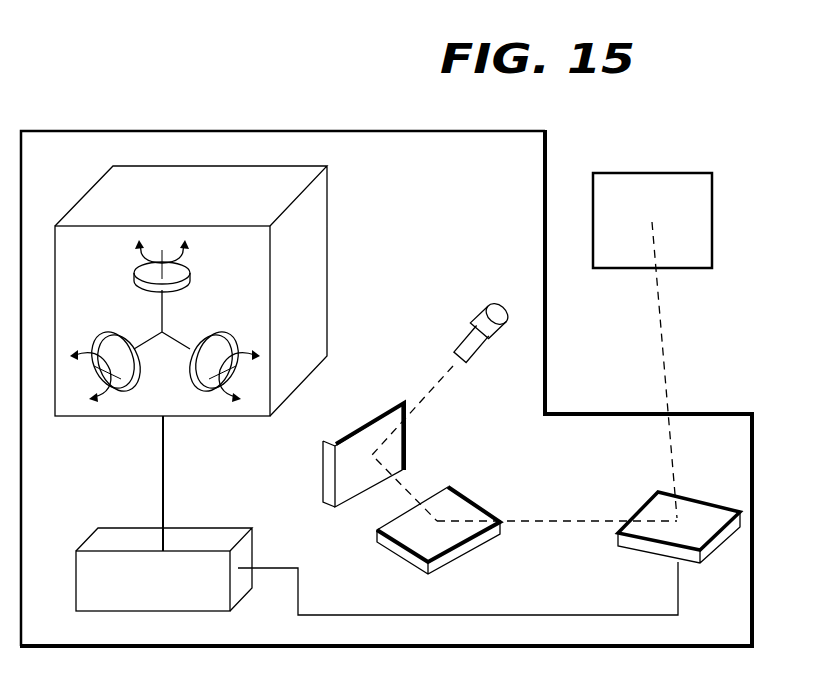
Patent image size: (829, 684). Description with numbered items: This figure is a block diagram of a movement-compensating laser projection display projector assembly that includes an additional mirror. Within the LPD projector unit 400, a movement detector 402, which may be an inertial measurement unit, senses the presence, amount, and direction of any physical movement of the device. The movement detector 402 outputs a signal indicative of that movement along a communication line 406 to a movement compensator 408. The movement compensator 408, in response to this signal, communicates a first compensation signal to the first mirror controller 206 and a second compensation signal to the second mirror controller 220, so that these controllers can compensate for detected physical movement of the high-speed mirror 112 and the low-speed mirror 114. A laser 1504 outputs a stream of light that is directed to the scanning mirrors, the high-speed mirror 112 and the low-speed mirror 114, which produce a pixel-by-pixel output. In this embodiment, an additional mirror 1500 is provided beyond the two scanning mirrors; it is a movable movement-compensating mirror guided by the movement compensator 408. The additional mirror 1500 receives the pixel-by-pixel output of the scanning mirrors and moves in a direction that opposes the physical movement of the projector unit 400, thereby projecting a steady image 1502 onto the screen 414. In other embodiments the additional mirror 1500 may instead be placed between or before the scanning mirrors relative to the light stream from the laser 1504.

The LPD projector unit 400 is at (105, 108).
The movement detector 402 is at (315, 275).
The communication line 406 is at (165, 460).
The movement compensator 408 is at (122, 532).
The screen 414 is at (689, 172).
The steady image 1502 is at (650, 220).
The laser 1504 is at (480, 318).
The high-speed mirror 112 is at (408, 453).
The first mirror controller 206 is at (370, 420).
The low-speed mirror 114 is at (468, 500).
The second mirror controller 220 is at (465, 545).
The additional mirror 1500 is at (647, 503).